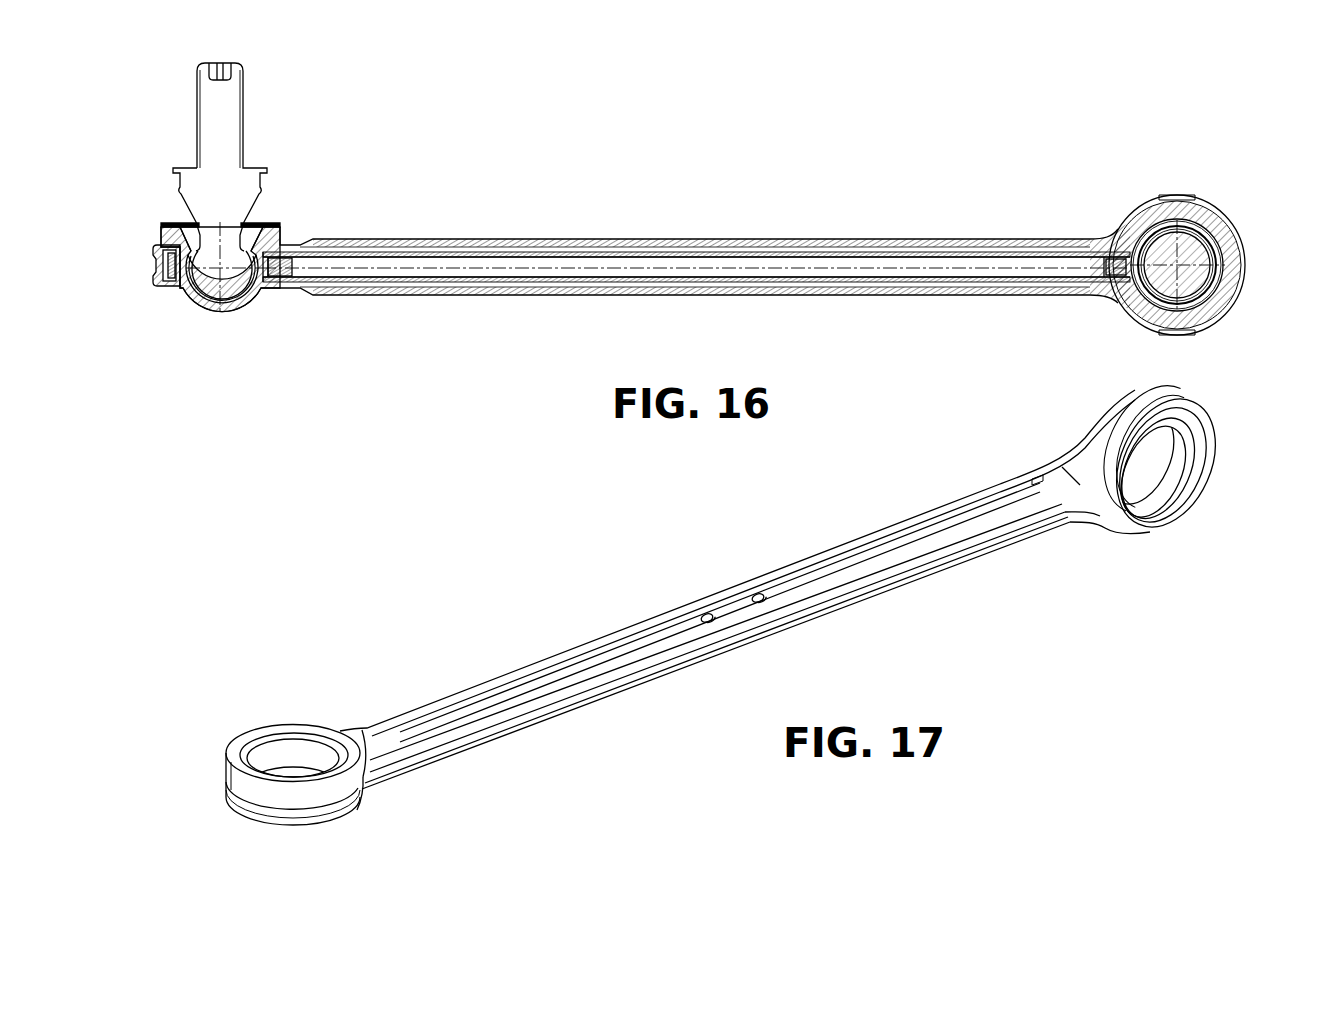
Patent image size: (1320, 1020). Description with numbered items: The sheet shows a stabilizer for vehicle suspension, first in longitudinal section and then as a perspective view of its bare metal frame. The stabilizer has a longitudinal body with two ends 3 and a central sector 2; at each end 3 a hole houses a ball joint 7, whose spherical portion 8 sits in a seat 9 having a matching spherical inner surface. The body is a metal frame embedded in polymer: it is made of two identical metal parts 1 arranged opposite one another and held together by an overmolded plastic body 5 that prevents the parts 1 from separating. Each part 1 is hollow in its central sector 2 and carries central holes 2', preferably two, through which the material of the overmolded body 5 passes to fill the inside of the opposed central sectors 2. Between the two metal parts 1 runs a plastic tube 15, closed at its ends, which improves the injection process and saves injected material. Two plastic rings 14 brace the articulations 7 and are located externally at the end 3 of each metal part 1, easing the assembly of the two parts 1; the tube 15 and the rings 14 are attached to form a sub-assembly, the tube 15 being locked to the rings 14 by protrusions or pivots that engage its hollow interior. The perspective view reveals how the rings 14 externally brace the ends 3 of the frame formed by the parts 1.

In FIG. 16, the metal part 1 is at (651, 239).
In FIG. 17, the metal part 1 is at (372, 728).
In FIG. 17, the central sector 2 is at (720, 612).
In FIG. 17, the central hole 2' is at (755, 643).
In FIG. 16, the end 3 is at (172, 282).
In FIG. 17, the end 3 is at (238, 745).
In FIG. 16, the overmolded plastic body 5 is at (553, 245).
In FIG. 16, the ball joint 7 is at (250, 108).
In FIG. 16, the spherical portion 8 is at (211, 288).
In FIG. 16, the seat 9 is at (241, 298).
In FIG. 16, the plastic ring 14 is at (284, 263).
In FIG. 17, the plastic ring 14 is at (312, 802).
In FIG. 16, the plastic tube 15 is at (421, 268).